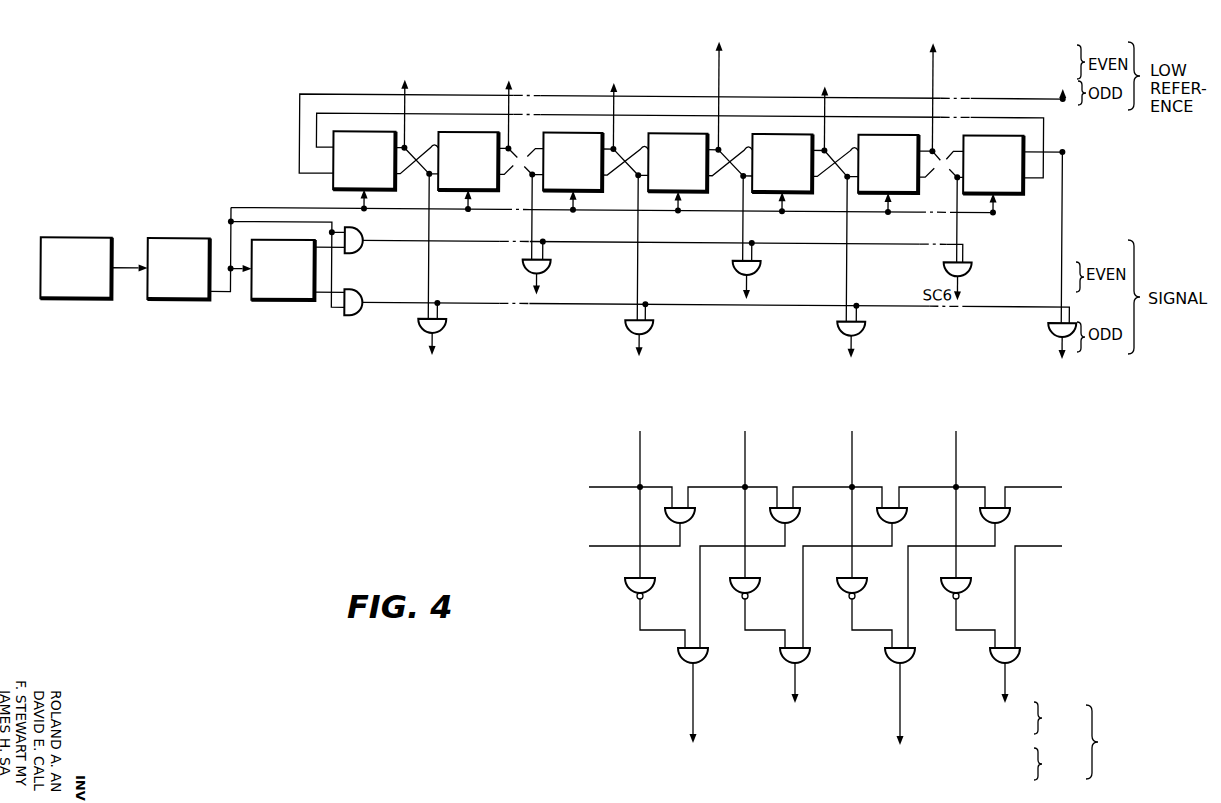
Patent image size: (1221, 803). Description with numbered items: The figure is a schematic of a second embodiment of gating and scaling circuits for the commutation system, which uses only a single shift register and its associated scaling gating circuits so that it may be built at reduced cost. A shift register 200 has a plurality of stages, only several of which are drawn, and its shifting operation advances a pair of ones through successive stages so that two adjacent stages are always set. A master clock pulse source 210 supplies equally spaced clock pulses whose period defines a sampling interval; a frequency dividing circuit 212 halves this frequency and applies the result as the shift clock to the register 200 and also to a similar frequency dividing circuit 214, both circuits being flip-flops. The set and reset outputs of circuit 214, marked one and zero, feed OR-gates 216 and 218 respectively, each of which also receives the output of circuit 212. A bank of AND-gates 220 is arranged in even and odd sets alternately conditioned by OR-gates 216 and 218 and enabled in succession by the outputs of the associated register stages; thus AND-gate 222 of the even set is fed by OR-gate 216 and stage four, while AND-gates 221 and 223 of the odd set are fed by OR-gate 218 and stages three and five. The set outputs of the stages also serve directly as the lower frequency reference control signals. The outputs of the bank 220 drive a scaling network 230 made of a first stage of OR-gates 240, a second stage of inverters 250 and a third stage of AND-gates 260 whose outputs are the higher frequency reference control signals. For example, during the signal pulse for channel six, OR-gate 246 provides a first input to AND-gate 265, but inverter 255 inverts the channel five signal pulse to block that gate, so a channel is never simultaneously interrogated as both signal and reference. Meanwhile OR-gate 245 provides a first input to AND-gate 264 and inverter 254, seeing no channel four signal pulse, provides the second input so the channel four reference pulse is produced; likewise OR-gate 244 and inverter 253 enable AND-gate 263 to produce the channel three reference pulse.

The shift register 200 is at (253, 158).
The master clock pulse source 210 is at (78, 239).
The frequency dividing circuit 212 is at (181, 239).
The frequency dividing circuit 214 is at (284, 300).
The OR-gate 216 is at (363, 251).
The OR-gate 218 is at (363, 313).
The AND-gates 220 is at (1032, 276).
The AND-gate 221 is at (654, 324).
The AND-gate 222 is at (761, 268).
The AND-gate 223 is at (838, 324).
The scaling network 230 is at (1096, 550).
The OR-gates 240 is at (594, 524).
The OR-gate 244 is at (800, 514).
The OR-gate 245 is at (906, 514).
The OR-gate 246 is at (1010, 514).
The inverters 250 is at (599, 597).
The inverter 253 is at (654, 588).
The inverter 254 is at (759, 588).
The inverter 255 is at (866, 588).
The AND-gates 260 is at (618, 664).
The AND-gate 263 is at (707, 654).
The AND-gate 264 is at (810, 658).
The AND-gate 265 is at (914, 656).